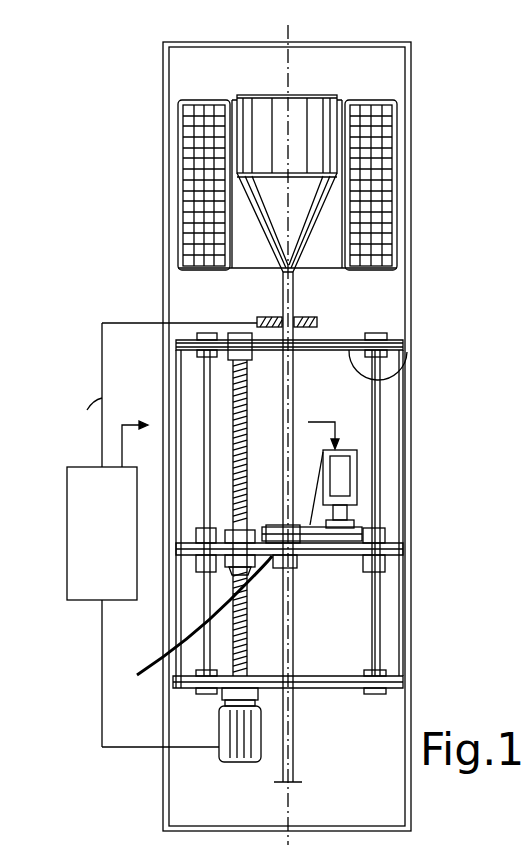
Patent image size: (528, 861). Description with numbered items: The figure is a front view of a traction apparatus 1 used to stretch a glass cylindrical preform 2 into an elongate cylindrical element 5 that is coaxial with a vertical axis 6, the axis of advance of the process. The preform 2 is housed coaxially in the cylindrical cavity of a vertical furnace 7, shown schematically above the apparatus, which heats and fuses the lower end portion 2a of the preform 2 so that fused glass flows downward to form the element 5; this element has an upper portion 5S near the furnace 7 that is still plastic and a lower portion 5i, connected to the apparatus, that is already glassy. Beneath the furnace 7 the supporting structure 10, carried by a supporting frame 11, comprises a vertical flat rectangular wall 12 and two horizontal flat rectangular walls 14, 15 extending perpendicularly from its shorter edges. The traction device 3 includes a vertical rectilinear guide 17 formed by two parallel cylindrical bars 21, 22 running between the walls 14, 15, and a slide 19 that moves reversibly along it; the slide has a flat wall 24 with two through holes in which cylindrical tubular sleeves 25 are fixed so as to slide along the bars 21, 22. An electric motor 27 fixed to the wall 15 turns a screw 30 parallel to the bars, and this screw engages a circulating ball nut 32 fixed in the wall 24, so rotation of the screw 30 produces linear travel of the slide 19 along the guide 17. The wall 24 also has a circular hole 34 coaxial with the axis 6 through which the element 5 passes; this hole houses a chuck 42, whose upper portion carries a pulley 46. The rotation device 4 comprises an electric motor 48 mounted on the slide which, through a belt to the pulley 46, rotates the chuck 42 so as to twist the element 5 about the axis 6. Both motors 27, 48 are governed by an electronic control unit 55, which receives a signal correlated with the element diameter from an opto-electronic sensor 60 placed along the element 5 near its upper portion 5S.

The traction apparatus 1 is at (322, 436).
The cylindrical preform 2 is at (315, 157).
The lower end portion 2a is at (295, 278).
The traction device 3 is at (191, 750).
The rotation device 4 is at (347, 440).
The elongate cylindrical element 5 is at (274, 531).
The upper portion 5S is at (283, 300).
The lower portion 5i is at (291, 592).
The vertical axis 6 is at (292, 75).
The vertical furnace 7 is at (376, 170).
The supporting structure 10 is at (413, 438).
The supporting frame 11 is at (394, 320).
The vertical flat rectangular wall 12 is at (338, 656).
The horizontal flat rectangular wall 14 is at (405, 357).
The horizontal flat rectangular wall 15 is at (318, 690).
The vertical rectilinear guide 17 is at (382, 626).
The slide 19 is at (382, 522).
The rectilinear cylindrical bar 21 is at (203, 378).
The rectilinear cylindrical bar 22 is at (381, 400).
The flat wall 24 is at (348, 548).
The cylindrical tubular sleeve 25 is at (184, 540).
The electric motor 27 is at (240, 762).
The screw 30 is at (238, 642).
The nut 32 is at (256, 530).
The circular hole 34 is at (192, 634).
The chuck 42 is at (299, 560).
The pulley 46 is at (300, 517).
The electric motor 48 is at (352, 445).
The electronic control unit 55 is at (90, 572).
The opto-electronic sensor 60 is at (331, 321).